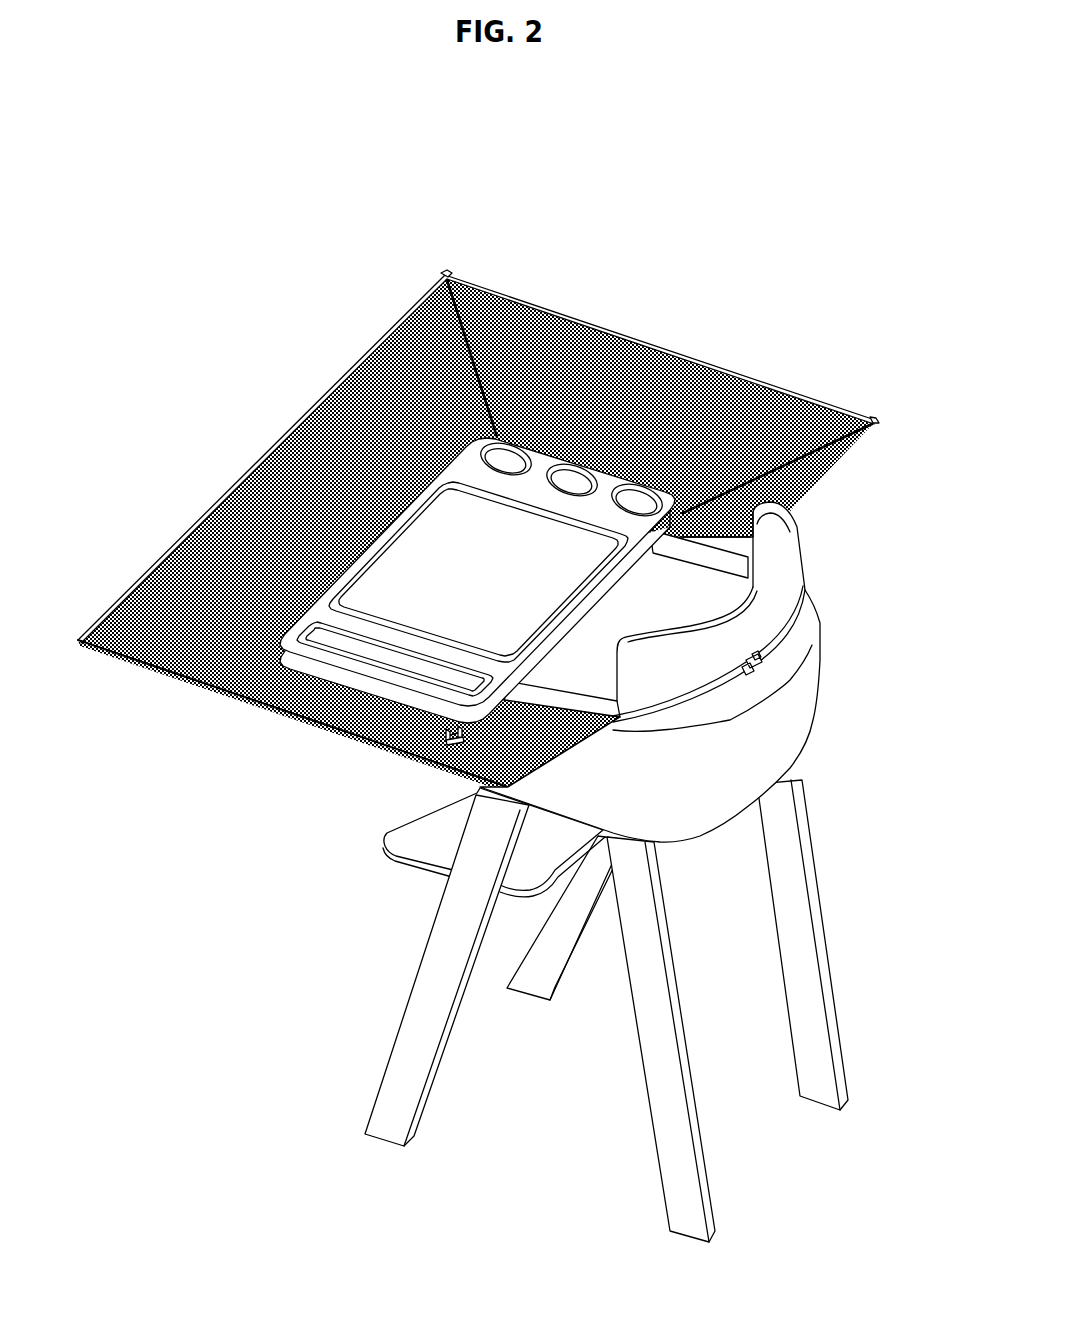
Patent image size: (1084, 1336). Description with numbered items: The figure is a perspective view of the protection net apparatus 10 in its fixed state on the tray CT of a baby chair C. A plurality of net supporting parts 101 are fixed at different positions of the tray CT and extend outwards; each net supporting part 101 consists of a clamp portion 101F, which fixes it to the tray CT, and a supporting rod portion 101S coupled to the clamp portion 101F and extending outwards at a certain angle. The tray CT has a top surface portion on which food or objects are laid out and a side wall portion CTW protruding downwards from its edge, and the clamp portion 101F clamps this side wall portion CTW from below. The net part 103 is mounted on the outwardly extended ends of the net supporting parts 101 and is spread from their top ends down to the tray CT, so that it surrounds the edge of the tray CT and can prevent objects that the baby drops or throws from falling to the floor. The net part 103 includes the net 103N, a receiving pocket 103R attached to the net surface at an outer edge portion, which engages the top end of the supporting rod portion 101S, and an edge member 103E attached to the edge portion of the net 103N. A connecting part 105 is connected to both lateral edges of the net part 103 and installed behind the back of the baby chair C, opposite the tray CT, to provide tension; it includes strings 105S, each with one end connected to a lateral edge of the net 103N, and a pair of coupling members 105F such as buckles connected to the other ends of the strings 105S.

The protection net apparatus 10 is at (634, 296).
The baby chair C is at (374, 987).
The net supporting part 101 is at (363, 788).
The clamp portion 101F is at (453, 735).
The supporting rod portion 101S is at (456, 772).
The net part 103 is at (478, 491).
The net 103N is at (368, 345).
The edge member 103E is at (418, 347).
The receiving pocket 103R is at (641, 367).
The connecting part 105 is at (771, 662).
The coupling member 105F is at (754, 668).
The string 105S is at (722, 697).
The tray CT is at (431, 615).
The side wall portion CTW is at (345, 696).